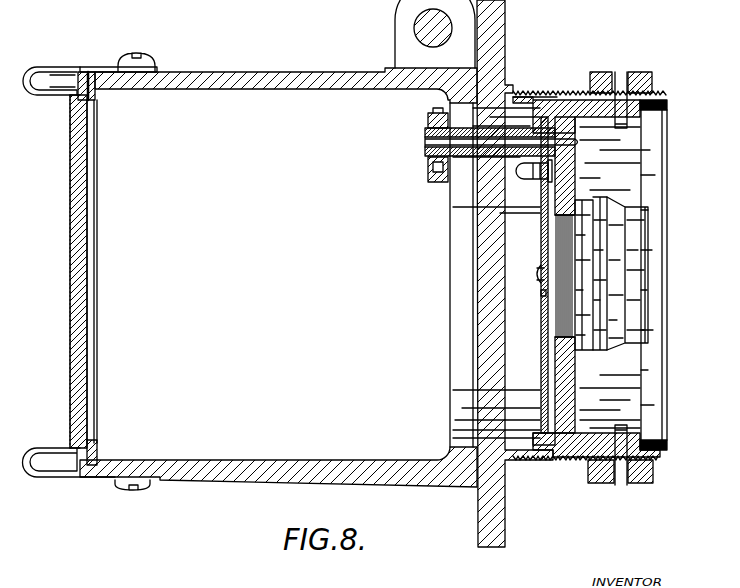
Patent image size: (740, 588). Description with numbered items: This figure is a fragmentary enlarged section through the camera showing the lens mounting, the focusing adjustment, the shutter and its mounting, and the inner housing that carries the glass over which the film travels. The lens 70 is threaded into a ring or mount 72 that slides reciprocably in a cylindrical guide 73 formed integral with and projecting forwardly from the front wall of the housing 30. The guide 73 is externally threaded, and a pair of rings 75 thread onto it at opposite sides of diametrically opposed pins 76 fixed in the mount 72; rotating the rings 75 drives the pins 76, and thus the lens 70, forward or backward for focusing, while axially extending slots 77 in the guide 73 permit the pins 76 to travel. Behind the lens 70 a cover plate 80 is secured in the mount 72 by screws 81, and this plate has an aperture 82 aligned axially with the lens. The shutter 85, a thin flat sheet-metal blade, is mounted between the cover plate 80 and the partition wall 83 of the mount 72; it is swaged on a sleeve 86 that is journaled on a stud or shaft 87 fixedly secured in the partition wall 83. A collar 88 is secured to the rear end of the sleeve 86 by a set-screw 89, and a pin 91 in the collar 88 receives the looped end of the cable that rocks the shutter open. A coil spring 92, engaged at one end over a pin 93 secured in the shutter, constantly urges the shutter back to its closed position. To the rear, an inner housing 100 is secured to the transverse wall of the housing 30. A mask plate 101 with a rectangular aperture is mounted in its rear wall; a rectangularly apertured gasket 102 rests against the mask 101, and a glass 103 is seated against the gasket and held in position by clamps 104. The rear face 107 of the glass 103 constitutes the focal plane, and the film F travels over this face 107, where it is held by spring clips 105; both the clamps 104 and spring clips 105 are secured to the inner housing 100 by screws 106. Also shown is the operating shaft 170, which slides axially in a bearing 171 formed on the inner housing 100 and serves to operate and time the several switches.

The housing 30 is at (505, 512).
The lens 70 is at (637, 284).
The ring or mount 72 is at (583, 439).
The cylindrical guide 73 is at (660, 388).
The rings 75 is at (642, 72).
The pins 76 is at (619, 129).
The slots 77 is at (660, 453).
The cover plate 80 is at (545, 366).
The screws 81 is at (537, 270).
The aperture 82 is at (542, 293).
The partition wall 83 is at (572, 375).
The shutter 85 is at (553, 229).
The sleeve 86 is at (474, 127).
The stud or shaft 87 is at (574, 148).
The collar 88 is at (428, 122).
The set-screw 89 is at (436, 112).
The pin 91 is at (430, 174).
The coil spring 92 is at (516, 173).
The pin 93 is at (538, 182).
The inner housing 100 is at (292, 478).
The mask plate 101 is at (96, 460).
The gasket 102 is at (95, 96).
The glass 103 is at (79, 357).
The clamps 104 is at (78, 79).
The spring clips 105 is at (50, 67).
The screws 106 is at (142, 490).
The rear face 107 is at (71, 313).
The operating shaft 170 is at (424, 41).
The bearing 171 is at (399, 27).
The filter F is at (70, 258).